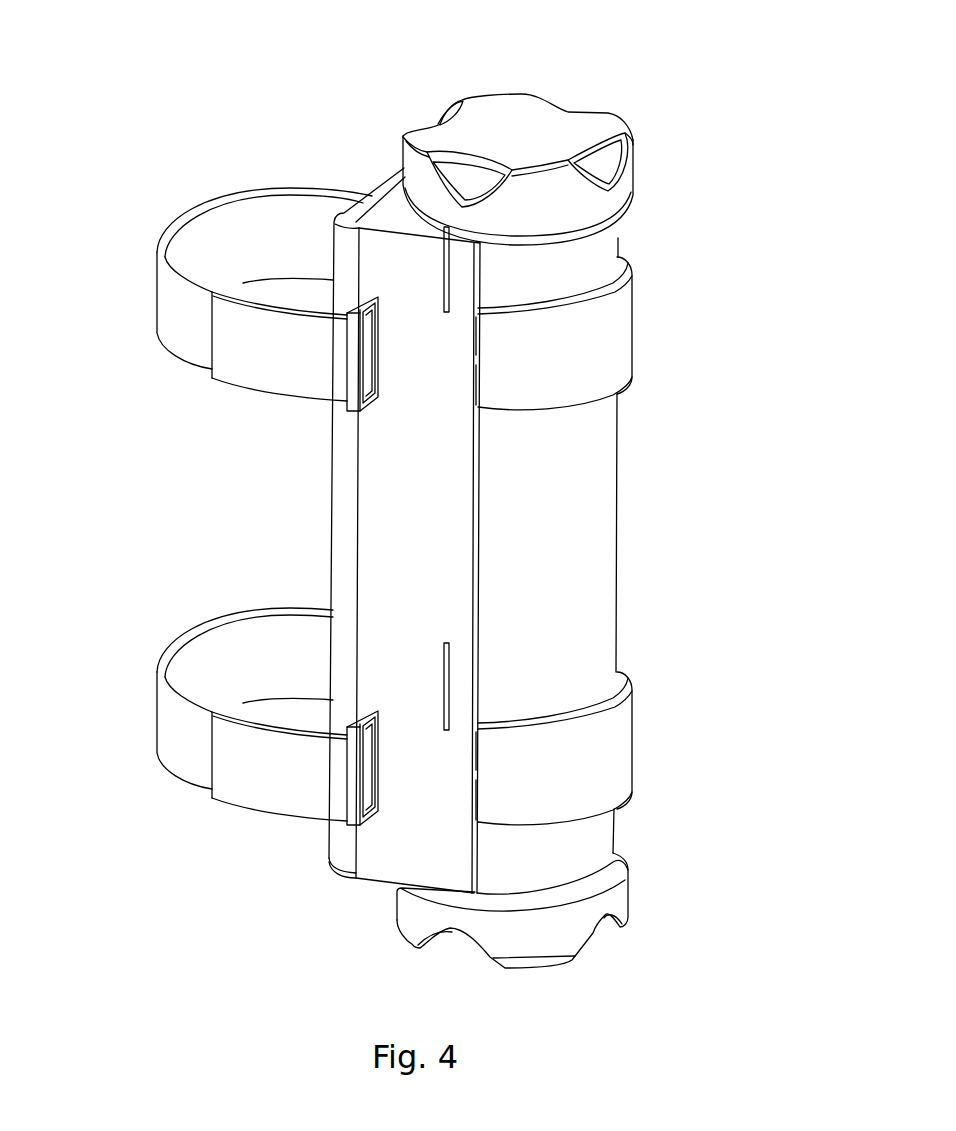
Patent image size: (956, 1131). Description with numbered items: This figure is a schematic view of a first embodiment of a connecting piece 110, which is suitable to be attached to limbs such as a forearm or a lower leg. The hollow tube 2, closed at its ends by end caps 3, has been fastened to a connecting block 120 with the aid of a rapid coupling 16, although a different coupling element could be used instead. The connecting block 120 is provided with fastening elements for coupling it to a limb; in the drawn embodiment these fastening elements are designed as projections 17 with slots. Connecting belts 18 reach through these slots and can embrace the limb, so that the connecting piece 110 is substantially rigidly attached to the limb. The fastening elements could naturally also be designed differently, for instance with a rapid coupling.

The end cap 3 is at (538, 130).
The hollow tube 2 is at (598, 487).
The rapid coupling 16 is at (598, 330).
The projection 17 is at (352, 373).
The connecting belt 18 is at (170, 313).
The connecting block 120 is at (407, 508).
The connecting piece 110 is at (652, 562).